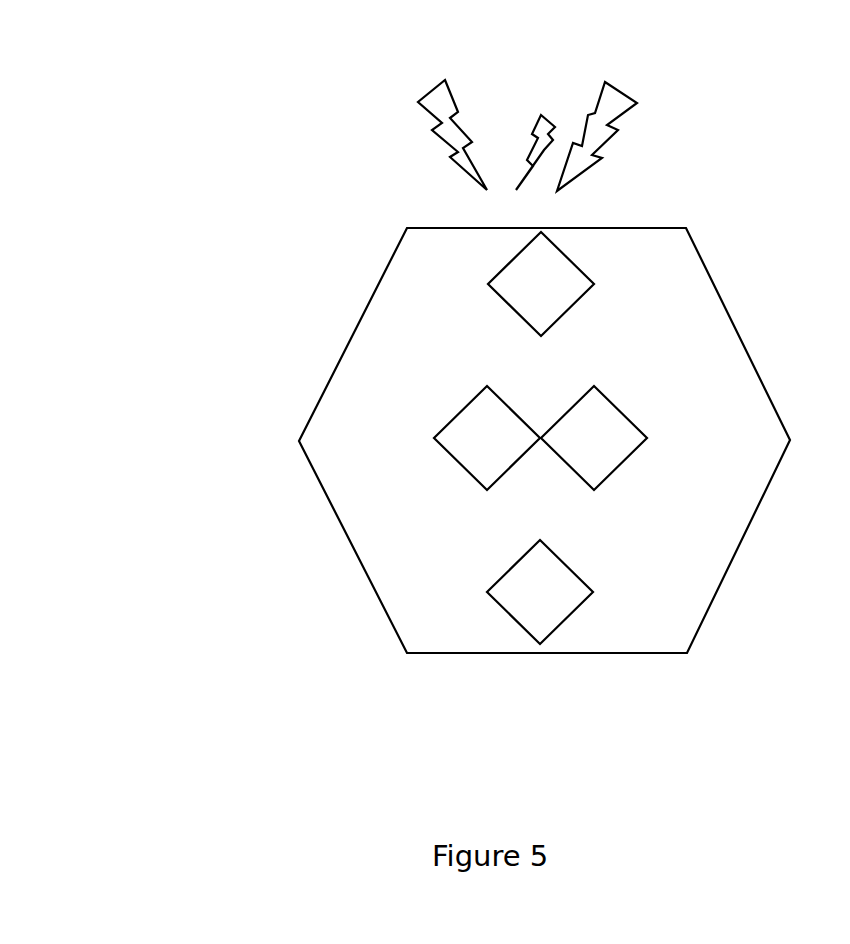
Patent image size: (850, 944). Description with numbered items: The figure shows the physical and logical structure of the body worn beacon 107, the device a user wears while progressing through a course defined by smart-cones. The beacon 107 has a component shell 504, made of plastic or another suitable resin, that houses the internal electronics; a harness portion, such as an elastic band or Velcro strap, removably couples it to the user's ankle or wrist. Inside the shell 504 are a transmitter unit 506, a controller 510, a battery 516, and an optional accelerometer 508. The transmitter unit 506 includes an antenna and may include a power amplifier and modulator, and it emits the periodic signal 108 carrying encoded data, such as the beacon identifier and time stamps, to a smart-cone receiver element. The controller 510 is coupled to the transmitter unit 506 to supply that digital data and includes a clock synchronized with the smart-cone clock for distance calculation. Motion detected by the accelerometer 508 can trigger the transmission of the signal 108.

The beacon 107 is at (425, 410).
The periodic signal 108 is at (588, 108).
The component shell 504 is at (519, 428).
The transmitter unit 506 is at (649, 256).
The accelerometer 508 is at (668, 426).
The controller 510 is at (471, 410).
The battery 516 is at (479, 658).